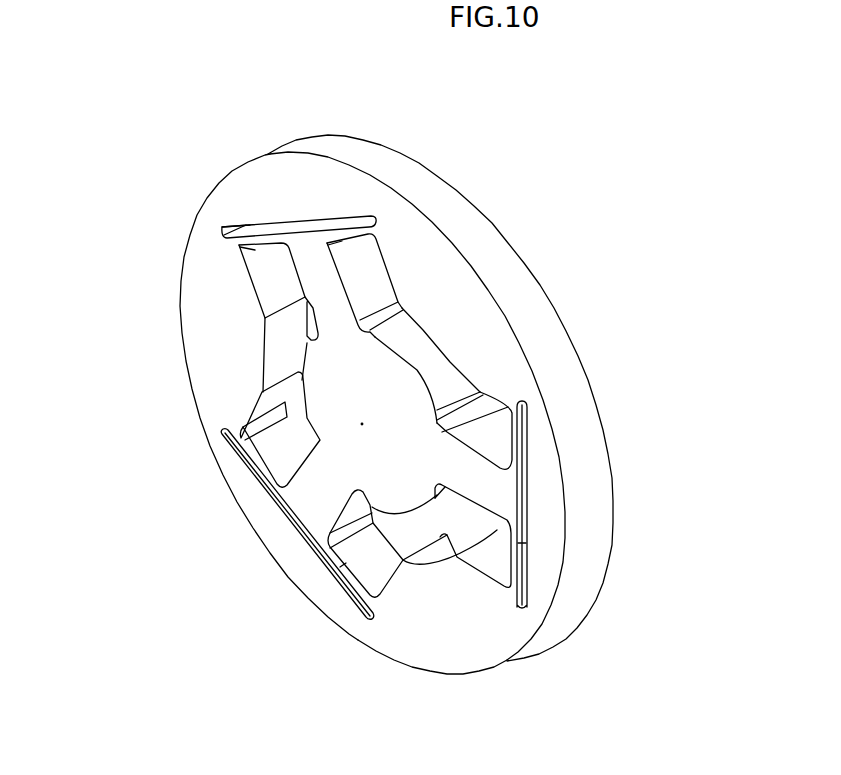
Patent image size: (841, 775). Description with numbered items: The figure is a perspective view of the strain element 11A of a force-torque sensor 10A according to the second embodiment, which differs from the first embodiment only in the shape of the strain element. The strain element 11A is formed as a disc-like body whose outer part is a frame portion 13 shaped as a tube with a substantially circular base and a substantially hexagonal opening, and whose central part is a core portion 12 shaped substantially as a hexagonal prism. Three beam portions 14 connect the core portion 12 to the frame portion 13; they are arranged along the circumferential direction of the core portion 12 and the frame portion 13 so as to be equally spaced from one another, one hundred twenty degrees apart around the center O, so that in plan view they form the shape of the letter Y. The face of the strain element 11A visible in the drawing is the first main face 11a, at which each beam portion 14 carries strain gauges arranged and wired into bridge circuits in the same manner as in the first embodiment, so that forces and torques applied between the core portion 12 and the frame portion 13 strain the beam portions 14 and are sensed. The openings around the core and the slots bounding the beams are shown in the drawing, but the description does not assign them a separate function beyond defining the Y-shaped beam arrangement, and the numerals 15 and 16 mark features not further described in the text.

The force-torque sensor 10A is at (108, 130).
The strain element 11A is at (197, 212).
The first main face 11a is at (468, 635).
The core portion 12 is at (388, 380).
The frame portion 13 is at (198, 335).
The beam portions 14 is at (365, 212).
The opening 15 is at (327, 287).
The slot edge 16 is at (348, 235).
The center O is at (362, 423).